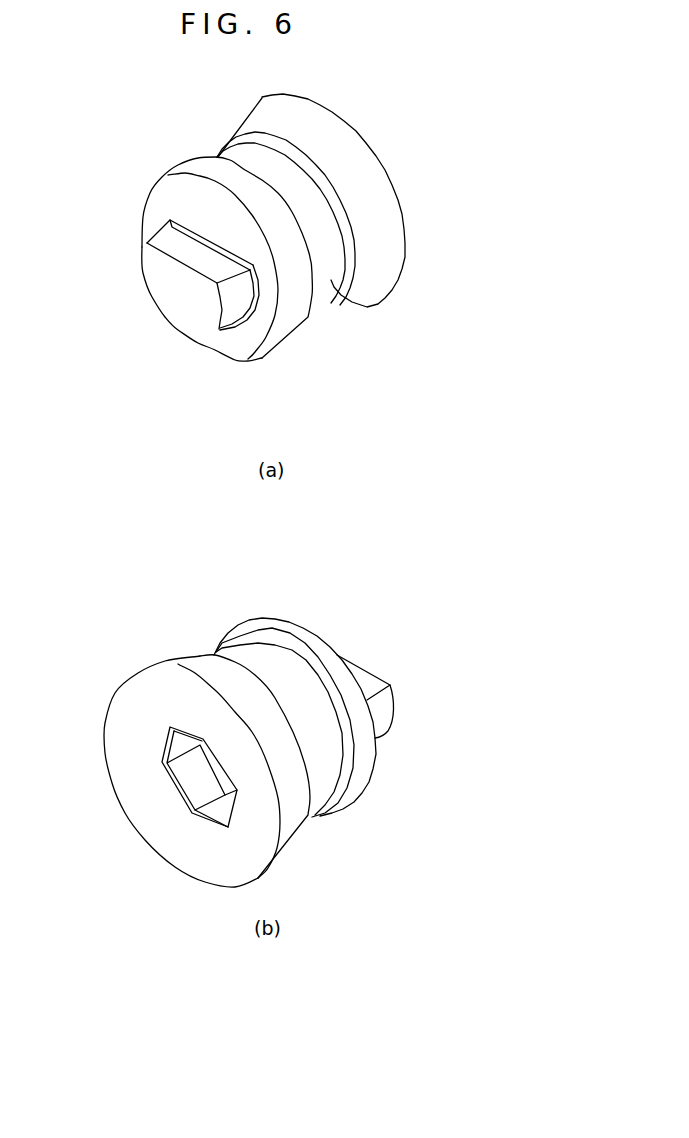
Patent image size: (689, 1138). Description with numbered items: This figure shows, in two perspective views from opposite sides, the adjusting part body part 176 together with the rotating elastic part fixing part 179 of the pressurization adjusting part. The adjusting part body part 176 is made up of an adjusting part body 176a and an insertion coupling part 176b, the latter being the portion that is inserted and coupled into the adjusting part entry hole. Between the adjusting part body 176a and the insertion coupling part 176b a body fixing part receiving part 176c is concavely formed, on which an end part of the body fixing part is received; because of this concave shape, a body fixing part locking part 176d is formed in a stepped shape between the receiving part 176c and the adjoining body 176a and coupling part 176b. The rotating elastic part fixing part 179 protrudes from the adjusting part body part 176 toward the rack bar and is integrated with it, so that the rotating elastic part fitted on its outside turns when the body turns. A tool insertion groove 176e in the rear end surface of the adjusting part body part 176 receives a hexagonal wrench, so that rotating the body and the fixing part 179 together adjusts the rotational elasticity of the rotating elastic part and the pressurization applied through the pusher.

The adjusting part body part 176 is at (531, 342).
The adjusting part body 176a is at (293, 322).
The insertion coupling part 176b is at (382, 265).
The body fixing part receiving part 176c is at (325, 292).
The body fixing part locking part 176d is at (349, 281).
The tool insertion groove 176e is at (188, 745).
The rotating elastic part fixing part 179 is at (190, 307).